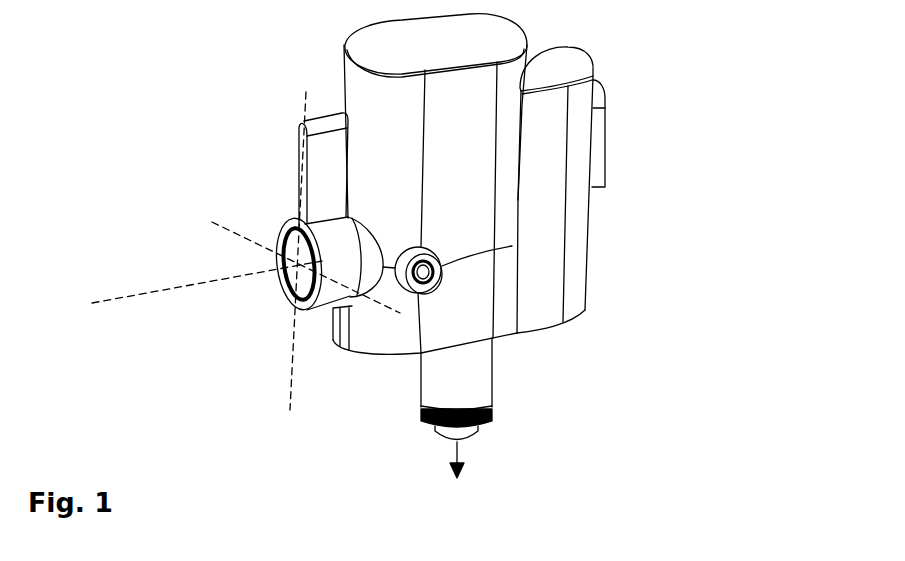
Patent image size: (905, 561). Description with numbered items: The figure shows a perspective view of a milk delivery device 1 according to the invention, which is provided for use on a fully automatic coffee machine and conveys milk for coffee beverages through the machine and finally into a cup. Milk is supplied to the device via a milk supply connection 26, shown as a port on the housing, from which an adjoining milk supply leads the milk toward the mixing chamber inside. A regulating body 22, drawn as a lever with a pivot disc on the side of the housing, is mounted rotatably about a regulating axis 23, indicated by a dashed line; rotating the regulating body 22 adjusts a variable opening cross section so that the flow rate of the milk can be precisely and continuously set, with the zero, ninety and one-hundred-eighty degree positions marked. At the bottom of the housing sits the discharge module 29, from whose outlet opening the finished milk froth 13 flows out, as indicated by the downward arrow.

The milk delivery device 1 is at (429, 246).
The milk froth 13 is at (457, 458).
The regulating body 22 is at (278, 230).
The regulating axis 23 is at (157, 292).
The milk supply connection 26 is at (445, 277).
The discharge module 29 is at (440, 390).